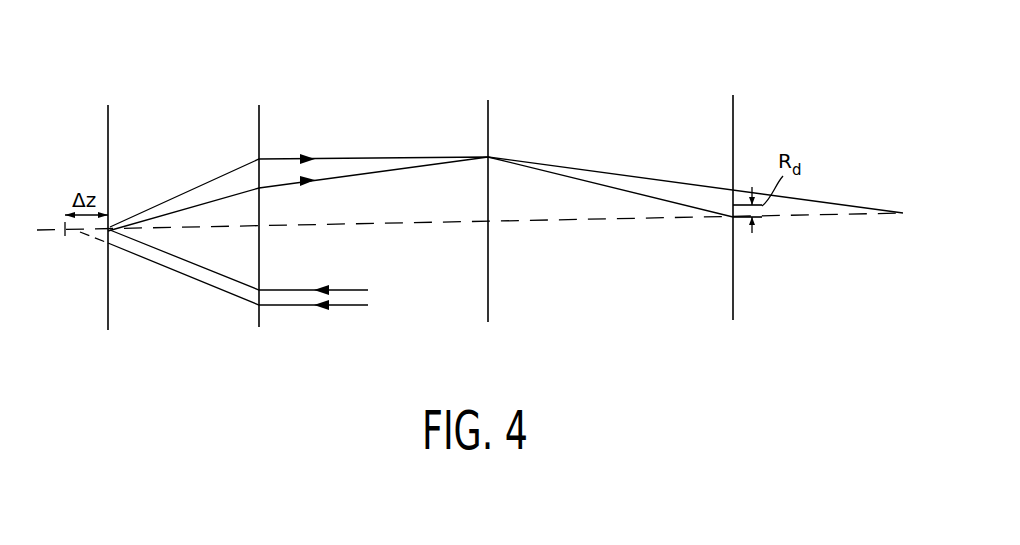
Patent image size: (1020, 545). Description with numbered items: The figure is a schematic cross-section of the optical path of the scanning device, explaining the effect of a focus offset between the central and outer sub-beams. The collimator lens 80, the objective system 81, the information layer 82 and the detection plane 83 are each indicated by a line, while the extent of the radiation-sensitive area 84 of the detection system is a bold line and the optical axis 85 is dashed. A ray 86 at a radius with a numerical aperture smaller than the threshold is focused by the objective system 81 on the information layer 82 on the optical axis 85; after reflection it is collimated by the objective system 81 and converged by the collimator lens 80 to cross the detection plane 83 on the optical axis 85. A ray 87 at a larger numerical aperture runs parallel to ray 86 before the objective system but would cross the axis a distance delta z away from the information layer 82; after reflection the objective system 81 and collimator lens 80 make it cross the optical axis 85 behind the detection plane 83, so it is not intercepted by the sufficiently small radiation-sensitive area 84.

The collimator lens 80 is at (488, 113).
The objective system 81 is at (259, 118).
The information layer 82 is at (108, 118).
The detection plane 83 is at (733, 110).
The radiation-sensitive area 84 is at (735, 219).
The optical axis 85 is at (591, 223).
The ray 86 is at (352, 288).
The ray 87 is at (345, 307).